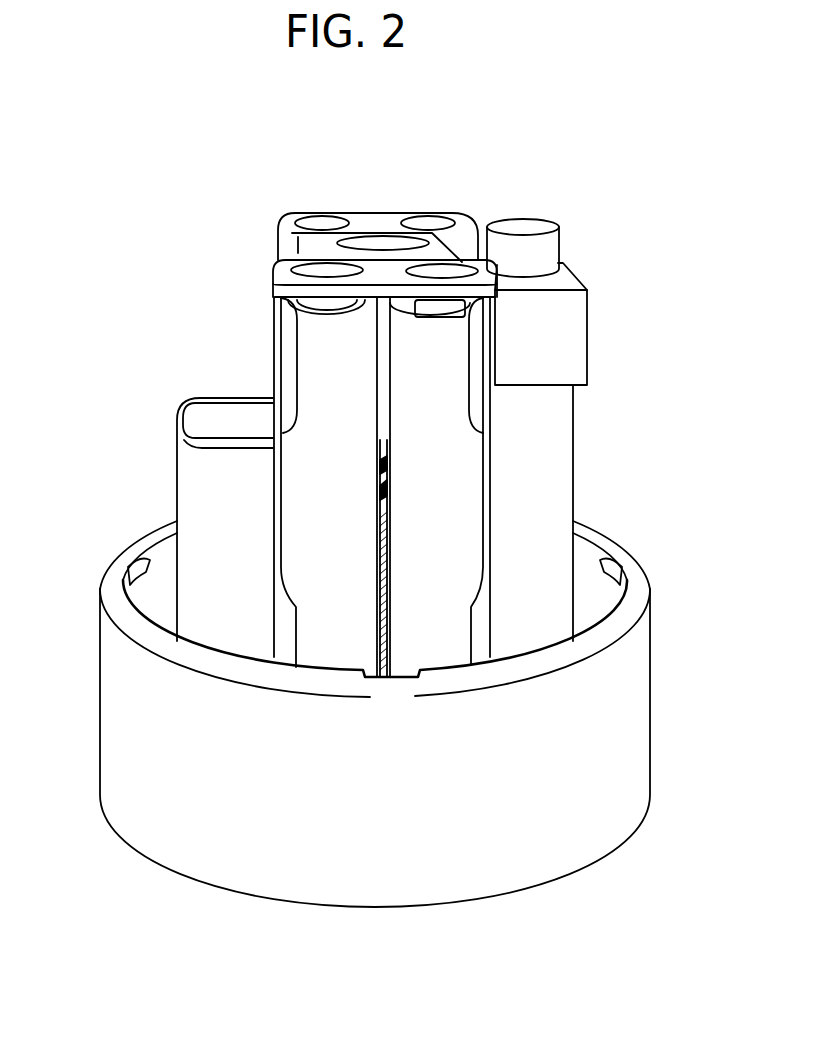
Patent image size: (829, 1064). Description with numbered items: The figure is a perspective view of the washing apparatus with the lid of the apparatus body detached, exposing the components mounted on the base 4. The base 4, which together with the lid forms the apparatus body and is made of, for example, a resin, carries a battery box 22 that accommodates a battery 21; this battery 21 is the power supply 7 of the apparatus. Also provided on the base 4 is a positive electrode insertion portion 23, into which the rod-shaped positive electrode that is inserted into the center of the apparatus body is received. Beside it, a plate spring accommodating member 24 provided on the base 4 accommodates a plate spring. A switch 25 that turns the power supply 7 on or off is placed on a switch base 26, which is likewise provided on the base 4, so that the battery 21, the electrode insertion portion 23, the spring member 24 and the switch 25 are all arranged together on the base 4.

The base 4 is at (623, 672).
The power supply 7 is at (437, 367).
The battery 21 is at (320, 355).
The battery box 22 is at (463, 280).
The positive electrode insertion portion 23 is at (378, 243).
The plate spring accommodating member 24 is at (212, 417).
The switch 25 is at (540, 255).
The switch base 26 is at (542, 418).